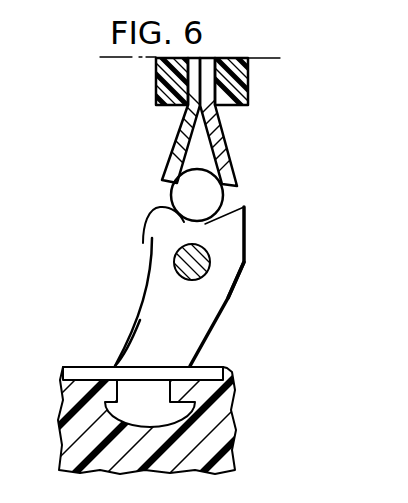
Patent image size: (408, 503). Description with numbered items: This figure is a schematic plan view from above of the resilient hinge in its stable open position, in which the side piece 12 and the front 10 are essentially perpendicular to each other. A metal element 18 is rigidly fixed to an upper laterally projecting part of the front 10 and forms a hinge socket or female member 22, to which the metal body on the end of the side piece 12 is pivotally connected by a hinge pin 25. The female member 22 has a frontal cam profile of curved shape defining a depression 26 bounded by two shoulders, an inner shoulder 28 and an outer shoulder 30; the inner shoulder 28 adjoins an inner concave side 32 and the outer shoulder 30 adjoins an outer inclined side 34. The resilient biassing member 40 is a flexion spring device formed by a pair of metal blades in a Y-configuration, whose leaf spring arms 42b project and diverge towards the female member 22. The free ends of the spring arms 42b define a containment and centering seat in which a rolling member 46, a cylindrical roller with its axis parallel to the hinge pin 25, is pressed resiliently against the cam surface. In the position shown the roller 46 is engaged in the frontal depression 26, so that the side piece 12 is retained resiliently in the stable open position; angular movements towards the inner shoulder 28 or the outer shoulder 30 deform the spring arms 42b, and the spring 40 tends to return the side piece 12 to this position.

The front 10 is at (215, 420).
The side piece 12 is at (157, 80).
The metal element 18 is at (210, 362).
The female member 22 is at (208, 295).
The hinge pin 25 is at (207, 258).
The depression 26 is at (151, 238).
The inner shoulder 28 is at (150, 210).
The outer shoulder 30 is at (246, 205).
The inner concave side 32 is at (138, 322).
The outer inclined side 34 is at (241, 273).
The resilient biassing member 40 is at (230, 71).
The leaf spring arms 42b is at (222, 139).
The rolling member 46 is at (168, 172).